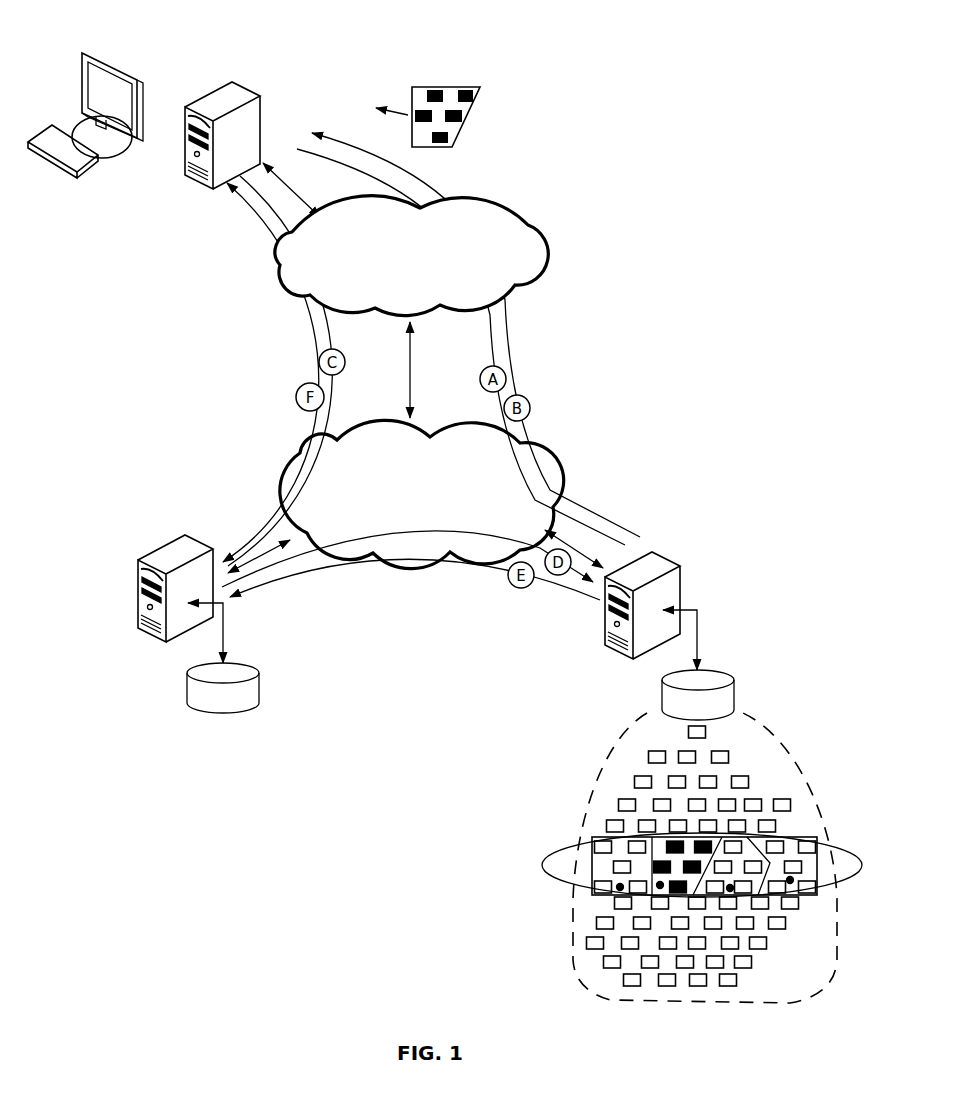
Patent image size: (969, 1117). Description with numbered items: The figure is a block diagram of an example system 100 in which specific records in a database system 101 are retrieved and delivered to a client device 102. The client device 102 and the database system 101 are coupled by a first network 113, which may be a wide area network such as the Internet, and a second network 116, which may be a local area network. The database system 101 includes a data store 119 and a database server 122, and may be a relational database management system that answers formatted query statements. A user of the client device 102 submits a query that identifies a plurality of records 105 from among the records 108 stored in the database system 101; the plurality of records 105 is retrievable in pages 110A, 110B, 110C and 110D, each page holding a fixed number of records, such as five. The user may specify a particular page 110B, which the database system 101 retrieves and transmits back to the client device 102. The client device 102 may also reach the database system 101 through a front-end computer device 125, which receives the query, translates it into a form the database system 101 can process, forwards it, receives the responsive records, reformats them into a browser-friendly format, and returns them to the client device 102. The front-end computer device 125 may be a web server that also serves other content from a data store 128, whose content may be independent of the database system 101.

The system 100 is at (648, 88).
The database system 101 is at (722, 572).
The client device 102 is at (163, 68).
The plurality of records 105 is at (553, 880).
The records 108 is at (610, 775).
The page 110A is at (620, 887).
The page 110B is at (468, 123).
The page 110C is at (730, 888).
The page 110D is at (790, 880).
The first network 113 is at (545, 245).
The second network 116 is at (408, 568).
The data store 119 is at (735, 695).
The database server 122 is at (682, 587).
The front-end computer device 125 is at (138, 627).
The data store 128 is at (212, 712).